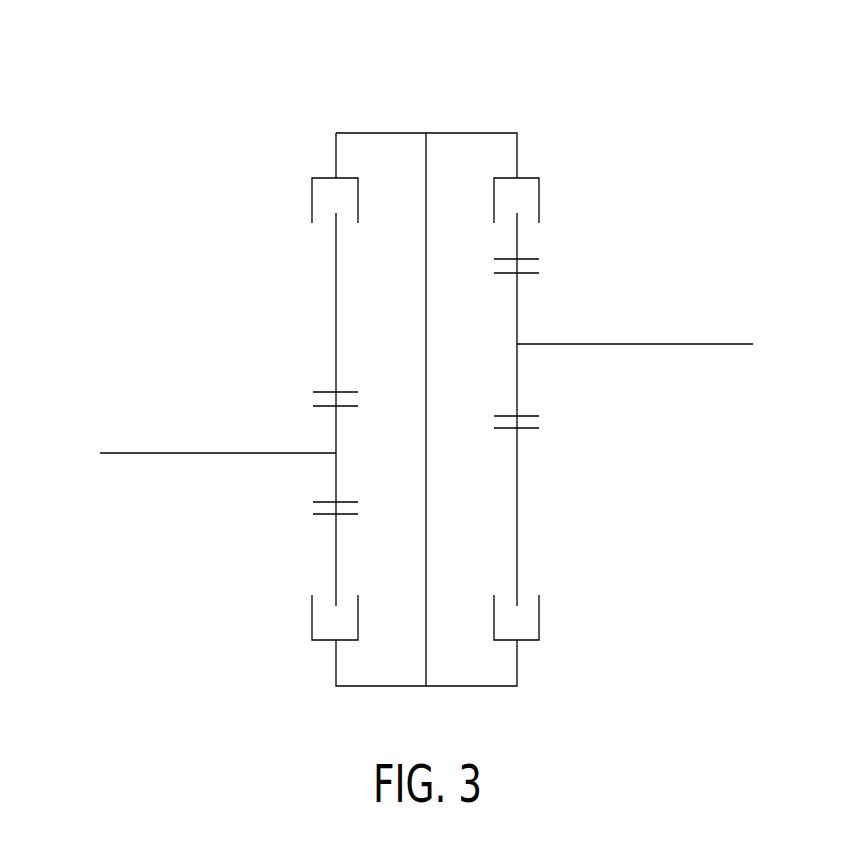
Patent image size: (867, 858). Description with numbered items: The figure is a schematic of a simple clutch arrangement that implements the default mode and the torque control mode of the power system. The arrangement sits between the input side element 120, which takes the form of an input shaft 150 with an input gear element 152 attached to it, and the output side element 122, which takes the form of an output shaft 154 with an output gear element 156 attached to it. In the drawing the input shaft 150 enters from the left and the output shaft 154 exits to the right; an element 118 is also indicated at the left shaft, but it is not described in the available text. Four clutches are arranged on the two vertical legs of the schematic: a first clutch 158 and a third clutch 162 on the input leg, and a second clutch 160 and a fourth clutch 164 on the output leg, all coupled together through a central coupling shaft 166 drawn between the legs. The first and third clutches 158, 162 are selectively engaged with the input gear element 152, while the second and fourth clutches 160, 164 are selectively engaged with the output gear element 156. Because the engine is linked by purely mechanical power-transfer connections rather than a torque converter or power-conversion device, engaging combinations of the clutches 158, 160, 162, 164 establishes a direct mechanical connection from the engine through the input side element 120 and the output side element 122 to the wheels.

The first input shaft 118 is at (133, 467).
The input side element 120 is at (686, 328).
The output side element 122 is at (257, 106).
The input shaft 150 is at (232, 453).
The input gear element 152 is at (336, 428).
The output shaft 154 is at (586, 344).
The output gear element 156 is at (517, 308).
The first clutch 158 is at (312, 200).
The second clutch 160 is at (539, 200).
The third clutch 162 is at (310, 618).
The fourth clutch 164 is at (539, 616).
The coupling shaft 166 is at (426, 295).